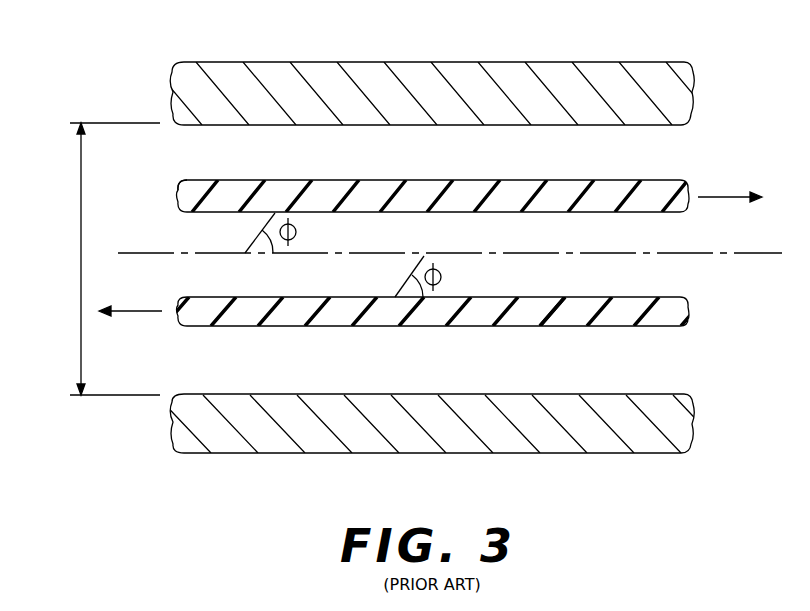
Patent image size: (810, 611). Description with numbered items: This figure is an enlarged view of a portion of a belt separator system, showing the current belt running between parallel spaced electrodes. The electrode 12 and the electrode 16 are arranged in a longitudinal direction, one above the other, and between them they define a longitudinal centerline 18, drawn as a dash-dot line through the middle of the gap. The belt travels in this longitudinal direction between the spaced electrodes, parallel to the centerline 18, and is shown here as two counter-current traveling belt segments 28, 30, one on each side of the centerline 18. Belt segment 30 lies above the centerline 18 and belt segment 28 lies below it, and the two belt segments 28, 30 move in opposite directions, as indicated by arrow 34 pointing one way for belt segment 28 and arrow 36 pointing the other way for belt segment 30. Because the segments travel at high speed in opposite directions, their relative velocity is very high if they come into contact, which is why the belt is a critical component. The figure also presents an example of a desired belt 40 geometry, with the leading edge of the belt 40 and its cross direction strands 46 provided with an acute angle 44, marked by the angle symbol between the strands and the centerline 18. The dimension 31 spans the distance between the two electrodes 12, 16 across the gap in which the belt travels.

The electrode 12 is at (688, 448).
The electrode 16 is at (692, 72).
The longitudinal centerline 18 is at (178, 253).
The belt segment 28 is at (663, 327).
The belt segment 30 is at (342, 180).
The gap distance 31 is at (78, 354).
The arrow 34 is at (123, 312).
The arrow 36 is at (730, 197).
The belt 40 is at (197, 182).
The acute angle 44 is at (297, 232).
The cross direction strands 46 is at (548, 315).